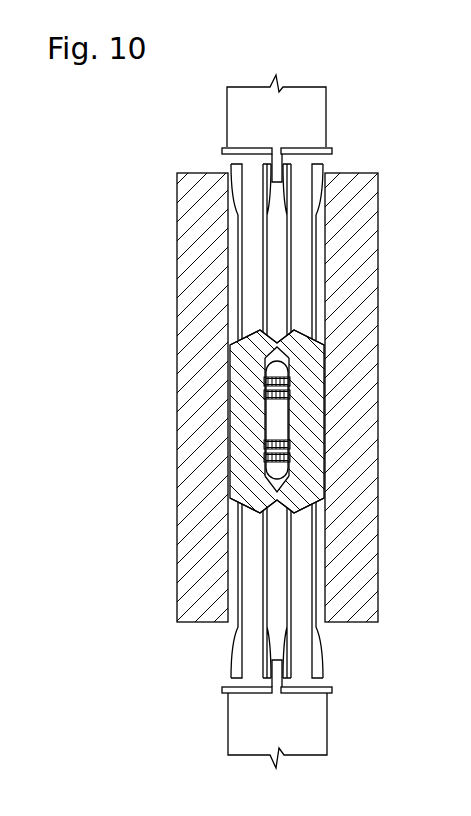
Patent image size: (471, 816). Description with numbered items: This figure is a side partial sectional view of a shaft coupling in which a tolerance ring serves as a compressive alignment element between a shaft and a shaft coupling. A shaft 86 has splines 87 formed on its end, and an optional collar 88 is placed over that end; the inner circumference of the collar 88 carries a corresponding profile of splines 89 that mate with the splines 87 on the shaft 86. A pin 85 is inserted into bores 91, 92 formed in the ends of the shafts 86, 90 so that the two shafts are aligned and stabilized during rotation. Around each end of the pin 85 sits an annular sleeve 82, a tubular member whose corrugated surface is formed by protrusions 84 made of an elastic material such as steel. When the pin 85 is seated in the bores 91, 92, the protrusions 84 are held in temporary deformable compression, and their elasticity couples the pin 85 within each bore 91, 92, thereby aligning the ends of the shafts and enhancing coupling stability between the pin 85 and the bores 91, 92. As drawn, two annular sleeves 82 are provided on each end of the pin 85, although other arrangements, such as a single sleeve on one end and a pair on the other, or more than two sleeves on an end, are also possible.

The shaft 90 is at (170, 135).
The shaft 86 is at (345, 728).
The collar 88 is at (195, 570).
The splines 89 is at (229, 623).
The splines 87 is at (320, 635).
The annular sleeve 82 is at (258, 377).
The bore 92 is at (283, 353).
The bore 91 is at (280, 485).
The pin 85 is at (282, 409).
The protrusions 84 is at (264, 379).